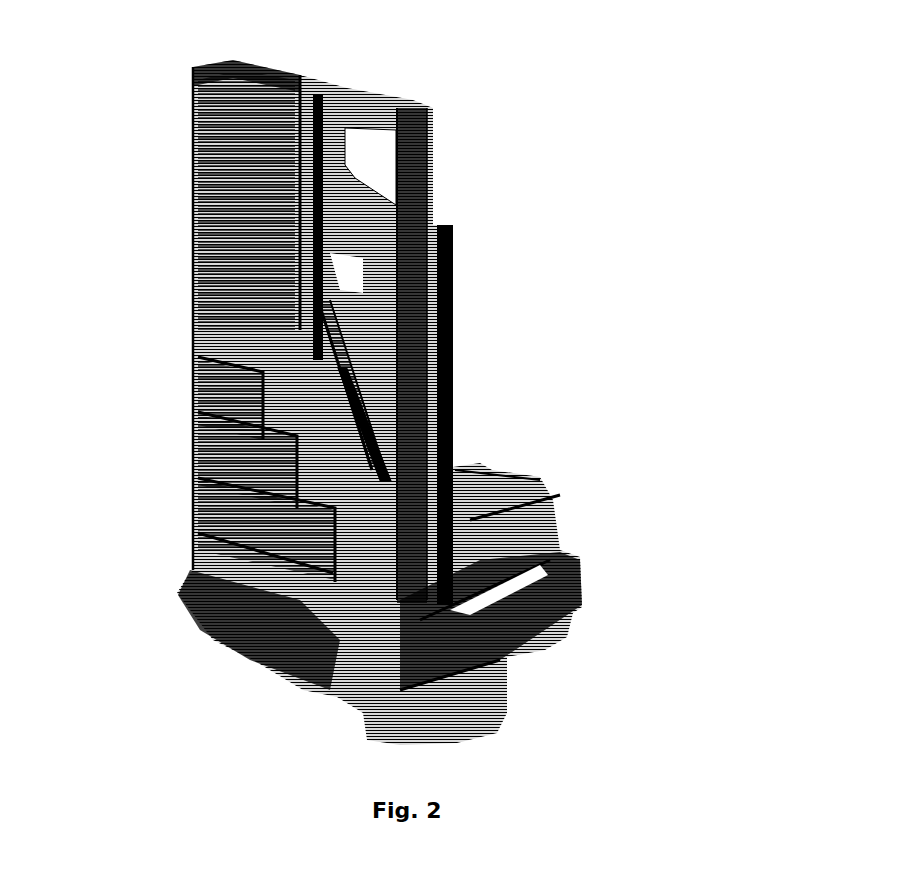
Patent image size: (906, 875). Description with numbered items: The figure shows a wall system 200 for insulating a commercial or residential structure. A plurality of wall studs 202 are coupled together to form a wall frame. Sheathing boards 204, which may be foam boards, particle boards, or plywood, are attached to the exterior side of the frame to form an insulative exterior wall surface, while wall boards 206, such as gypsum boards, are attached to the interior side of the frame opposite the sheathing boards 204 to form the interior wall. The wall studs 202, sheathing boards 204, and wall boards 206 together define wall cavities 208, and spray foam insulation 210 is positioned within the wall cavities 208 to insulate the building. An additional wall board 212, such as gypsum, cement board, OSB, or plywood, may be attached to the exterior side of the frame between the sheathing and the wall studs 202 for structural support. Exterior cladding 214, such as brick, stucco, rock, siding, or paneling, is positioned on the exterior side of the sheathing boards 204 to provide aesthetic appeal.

The wall system 200 is at (660, 240).
The wall studs 202 is at (420, 184).
The sheathing boards 204 is at (225, 276).
The wall boards 206 is at (440, 393).
The wall cavities 208 is at (362, 150).
The spray foam insulation 210 is at (373, 318).
The additional wall board 212 is at (377, 405).
The exterior cladding 214 is at (228, 468).